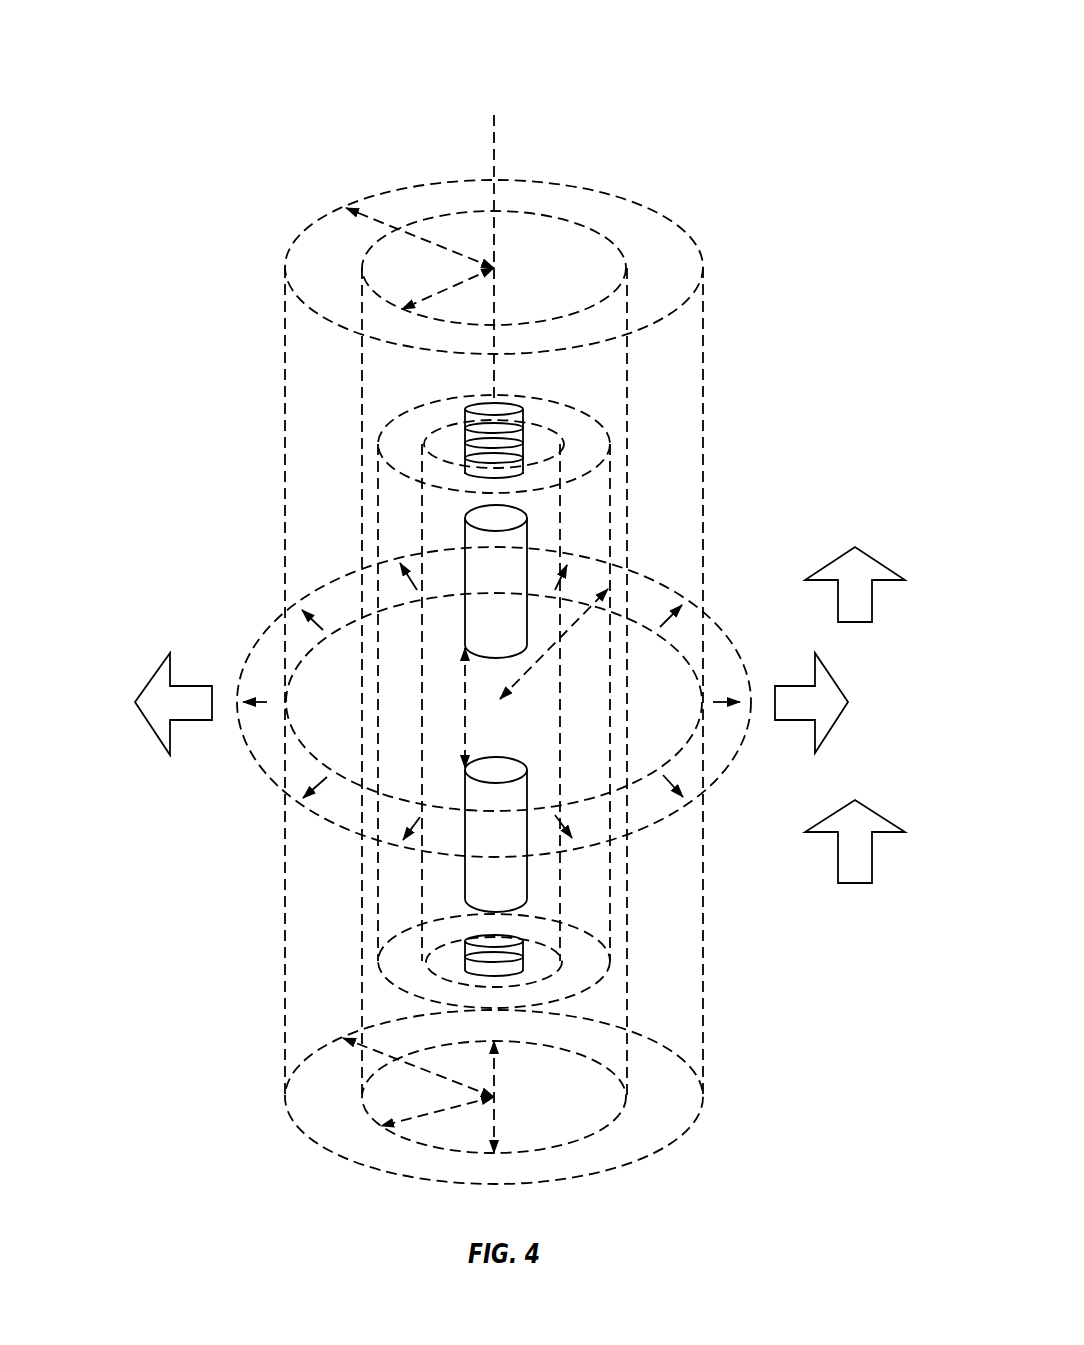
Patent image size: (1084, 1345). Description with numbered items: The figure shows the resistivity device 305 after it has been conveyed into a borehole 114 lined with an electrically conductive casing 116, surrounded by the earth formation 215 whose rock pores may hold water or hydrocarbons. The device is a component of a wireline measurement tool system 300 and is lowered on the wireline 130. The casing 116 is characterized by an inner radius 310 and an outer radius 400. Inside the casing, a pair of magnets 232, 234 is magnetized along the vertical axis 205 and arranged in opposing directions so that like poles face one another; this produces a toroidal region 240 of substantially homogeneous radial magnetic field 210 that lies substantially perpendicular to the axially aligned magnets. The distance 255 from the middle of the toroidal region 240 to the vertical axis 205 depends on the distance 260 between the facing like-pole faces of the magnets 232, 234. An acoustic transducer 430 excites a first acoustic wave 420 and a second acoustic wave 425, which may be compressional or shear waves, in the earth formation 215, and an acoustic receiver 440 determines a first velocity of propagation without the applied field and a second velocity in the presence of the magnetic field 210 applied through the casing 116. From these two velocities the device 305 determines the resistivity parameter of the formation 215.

The wireline measurement tool system 300 is at (180, 62).
The wireline 130 is at (495, 152).
The electrically conductive casing 116 is at (282, 322).
The borehole 114 is at (562, 243).
The outer radius rOD 400 is at (393, 227).
The inner radius rID 310 is at (452, 292).
The resistivity device 305 is at (532, 410).
The acoustic receiver 440 is at (483, 403).
The acoustic transducer 430 is at (467, 945).
The magnet 232 is at (465, 570).
The magnet 234 is at (465, 843).
The distance between faces of like poles 260 is at (465, 722).
The distance from toroidal region to vertical axis 255 is at (550, 650).
The toroidal region 240 is at (657, 798).
The radial magnetic field 210 is at (302, 570).
The first acoustic wave 420 is at (863, 535).
The second acoustic wave 425 is at (862, 793).
The vertical axis 205 is at (497, 1100).
The earth formation 215 is at (740, 434).